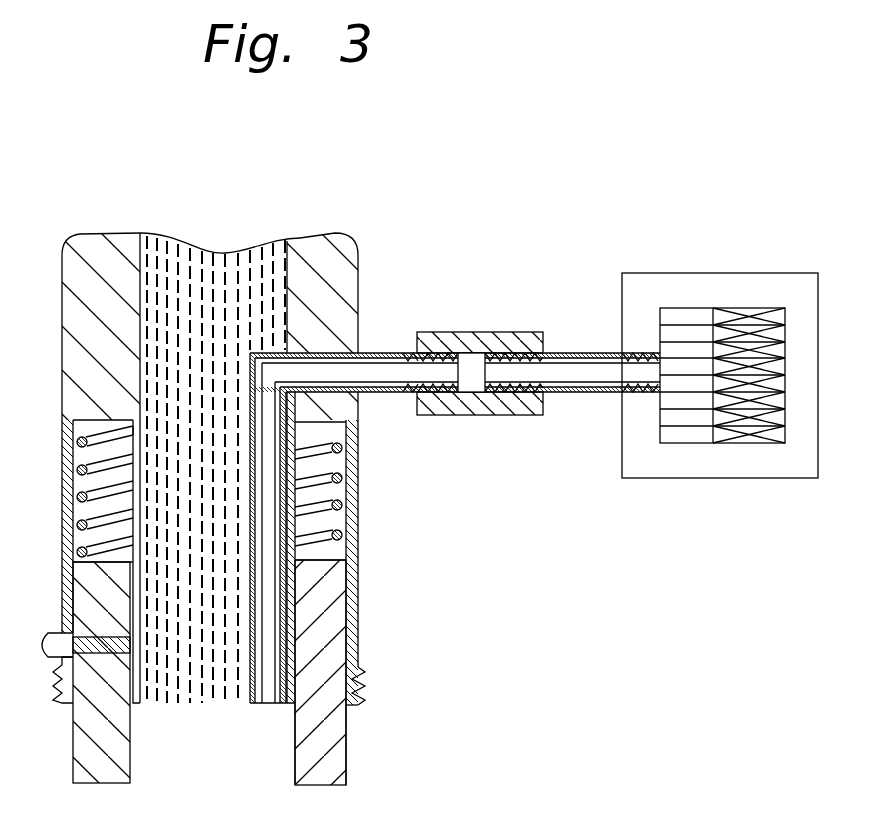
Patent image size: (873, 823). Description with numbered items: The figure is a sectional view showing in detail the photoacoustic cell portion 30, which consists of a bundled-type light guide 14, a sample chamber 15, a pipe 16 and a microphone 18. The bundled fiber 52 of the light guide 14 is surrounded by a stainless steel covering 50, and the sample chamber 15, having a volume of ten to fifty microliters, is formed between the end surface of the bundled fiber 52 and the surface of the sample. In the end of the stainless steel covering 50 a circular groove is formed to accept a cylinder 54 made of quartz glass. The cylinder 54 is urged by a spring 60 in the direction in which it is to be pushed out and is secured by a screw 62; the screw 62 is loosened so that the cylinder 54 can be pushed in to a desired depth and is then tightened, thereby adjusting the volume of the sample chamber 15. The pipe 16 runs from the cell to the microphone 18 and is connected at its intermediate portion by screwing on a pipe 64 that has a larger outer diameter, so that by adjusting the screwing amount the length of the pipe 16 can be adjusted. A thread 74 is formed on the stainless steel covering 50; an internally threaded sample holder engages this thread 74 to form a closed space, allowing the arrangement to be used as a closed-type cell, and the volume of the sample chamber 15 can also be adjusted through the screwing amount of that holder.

The light guide 14 is at (203, 232).
The sample chamber 15 is at (214, 766).
The pipe 16 is at (283, 613).
The microphone 18 is at (697, 273).
The photoacoustic cell portion 30 is at (494, 795).
The stainless steel covering 50 is at (80, 300).
The bundled fiber 52 is at (143, 352).
The cylinder 54 is at (73, 746).
The spring 60 is at (335, 486).
The screw 62 is at (48, 632).
The pipe 64 is at (466, 332).
The thread 74 is at (366, 692).